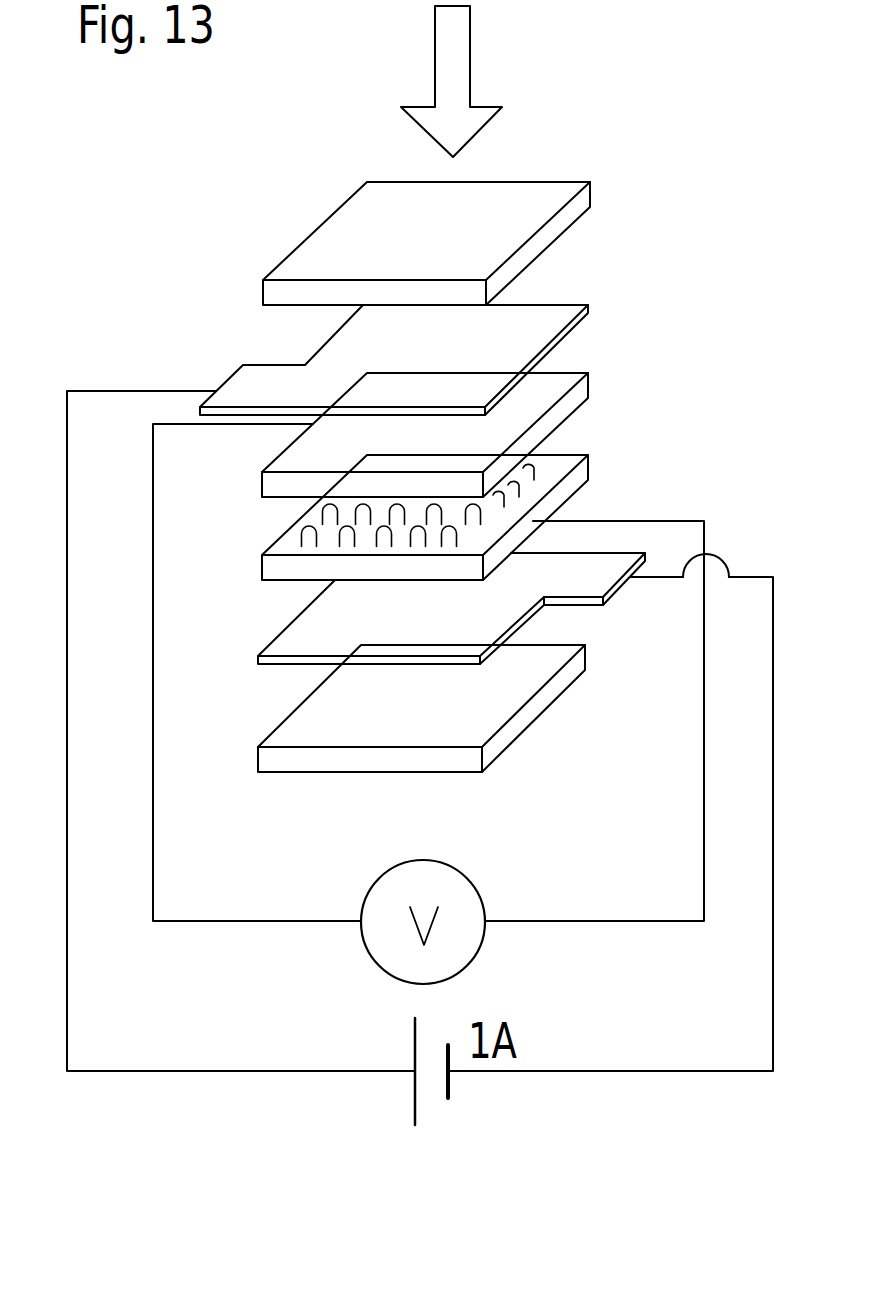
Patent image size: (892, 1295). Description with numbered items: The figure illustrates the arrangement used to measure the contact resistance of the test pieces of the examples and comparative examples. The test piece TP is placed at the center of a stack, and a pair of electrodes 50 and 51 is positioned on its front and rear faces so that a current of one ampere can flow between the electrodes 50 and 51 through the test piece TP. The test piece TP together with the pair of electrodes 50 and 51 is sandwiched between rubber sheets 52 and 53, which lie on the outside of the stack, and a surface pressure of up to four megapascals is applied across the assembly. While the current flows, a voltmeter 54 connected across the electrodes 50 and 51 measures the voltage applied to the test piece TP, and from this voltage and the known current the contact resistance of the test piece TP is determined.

The rubber sheet 52 is at (542, 242).
The electrode 50 is at (563, 333).
The test piece TP is at (558, 413).
The electrode 51 is at (592, 603).
The rubber sheet 53 is at (533, 713).
The voltmeter 54 is at (478, 900).